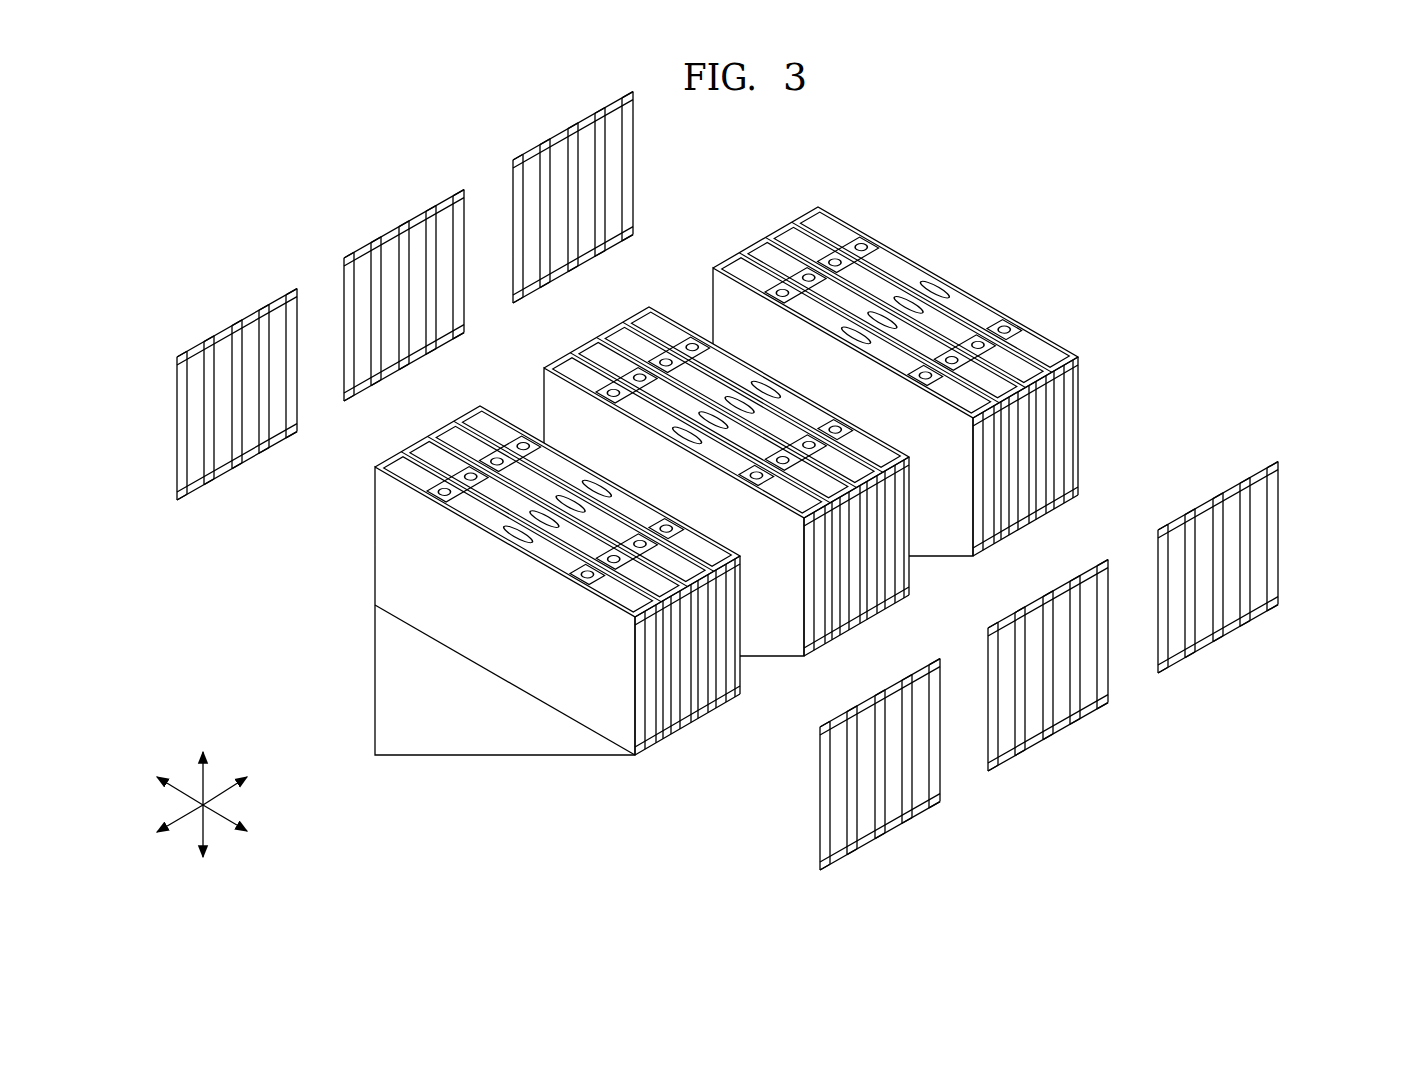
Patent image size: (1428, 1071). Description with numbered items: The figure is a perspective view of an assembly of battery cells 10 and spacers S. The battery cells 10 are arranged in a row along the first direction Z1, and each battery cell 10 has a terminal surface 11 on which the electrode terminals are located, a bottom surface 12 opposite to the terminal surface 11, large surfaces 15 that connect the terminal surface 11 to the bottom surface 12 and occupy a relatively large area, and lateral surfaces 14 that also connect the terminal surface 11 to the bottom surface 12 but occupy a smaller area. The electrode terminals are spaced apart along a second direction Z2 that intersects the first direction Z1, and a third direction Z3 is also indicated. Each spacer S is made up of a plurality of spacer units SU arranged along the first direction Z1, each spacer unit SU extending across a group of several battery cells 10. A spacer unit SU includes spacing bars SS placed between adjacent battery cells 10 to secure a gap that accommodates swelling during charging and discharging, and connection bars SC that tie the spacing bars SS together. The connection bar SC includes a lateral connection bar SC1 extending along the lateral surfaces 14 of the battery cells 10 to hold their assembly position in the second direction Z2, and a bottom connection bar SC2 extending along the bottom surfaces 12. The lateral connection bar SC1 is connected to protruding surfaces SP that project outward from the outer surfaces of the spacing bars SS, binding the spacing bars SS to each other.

The battery cell 10 is at (536, 604).
The terminal surface 11 is at (557, 503).
The bottom surface 12 is at (505, 684).
The lateral surface 14 is at (536, 616).
The large surface 15 is at (503, 611).
The spacer S is at (168, 431).
The protruding surface SP is at (795, 795).
The spacer unit SU is at (883, 837).
The connection bar SC is at (1280, 593).
The lateral connection bar SC1 is at (1256, 500).
The bottom connection bar SC2 is at (1256, 620).
The spacing bar SS is at (1186, 624).
The first direction Z1 is at (226, 796).
The second direction Z2 is at (226, 815).
The third direction Z3 is at (204, 788).